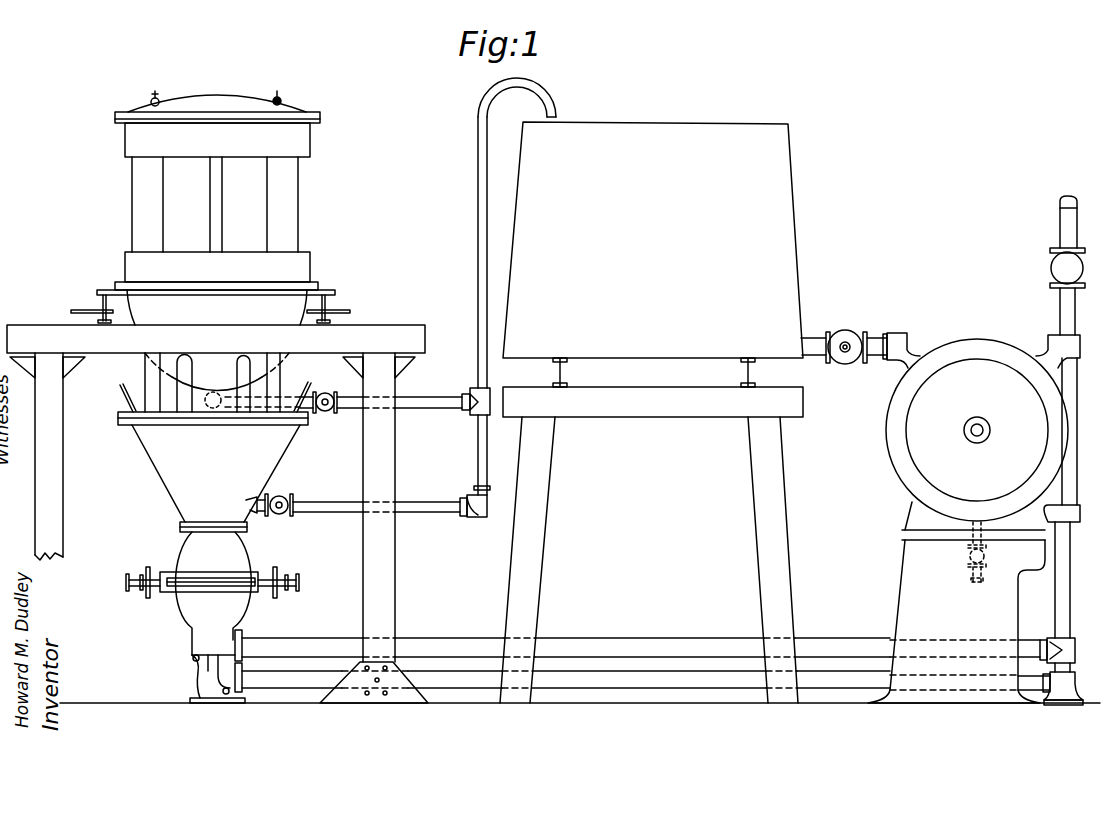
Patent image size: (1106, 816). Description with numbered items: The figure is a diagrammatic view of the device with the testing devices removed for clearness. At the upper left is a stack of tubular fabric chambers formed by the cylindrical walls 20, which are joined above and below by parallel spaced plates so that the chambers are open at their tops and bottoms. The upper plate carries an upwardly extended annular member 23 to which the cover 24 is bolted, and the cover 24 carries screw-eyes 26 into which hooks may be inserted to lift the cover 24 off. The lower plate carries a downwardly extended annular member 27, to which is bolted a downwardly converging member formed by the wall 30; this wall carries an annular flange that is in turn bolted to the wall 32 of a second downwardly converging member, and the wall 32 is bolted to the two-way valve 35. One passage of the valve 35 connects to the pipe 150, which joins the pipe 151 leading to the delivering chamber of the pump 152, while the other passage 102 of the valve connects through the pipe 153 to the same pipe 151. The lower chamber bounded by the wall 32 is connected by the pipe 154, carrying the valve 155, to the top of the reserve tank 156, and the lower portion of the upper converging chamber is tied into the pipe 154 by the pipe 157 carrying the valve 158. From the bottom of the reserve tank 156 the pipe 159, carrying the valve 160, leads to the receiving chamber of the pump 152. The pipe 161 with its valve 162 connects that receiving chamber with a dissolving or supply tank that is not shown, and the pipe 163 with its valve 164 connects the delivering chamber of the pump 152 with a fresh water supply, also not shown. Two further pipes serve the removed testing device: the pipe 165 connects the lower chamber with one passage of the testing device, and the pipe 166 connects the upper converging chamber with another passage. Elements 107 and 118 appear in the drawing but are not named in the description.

The cylindrical walls 20 is at (135, 191).
The upwardly extended annular member 23 is at (311, 141).
The cover 24 is at (226, 101).
The screw-eyes 26 is at (158, 97).
The downwardly extended annular member 27 is at (306, 265).
The wall 30 is at (296, 328).
The wall 32 is at (213, 442).
The two-way valve 35 is at (247, 566).
The passage 102 is at (279, 571).
The disc 107 is at (148, 567).
The hand wheels 118 is at (126, 581).
The pipe 150 is at (601, 671).
The pipe 151 is at (1060, 603).
The pump 152 is at (983, 427).
The pipe 153 is at (678, 639).
The pipe 154 is at (477, 203).
The valve 155 is at (284, 496).
The reserve tank 156 is at (651, 412).
The pipe 157 is at (435, 397).
The valve 158 is at (326, 413).
The pipe 159 is at (879, 337).
The valve 160 is at (846, 330).
The pipe 161 is at (1060, 313).
The valve 162 is at (1050, 268).
The pipe 163 is at (974, 574).
The valve 164 is at (968, 556).
The pipe 165 is at (217, 388).
The pipe 166 is at (85, 308).